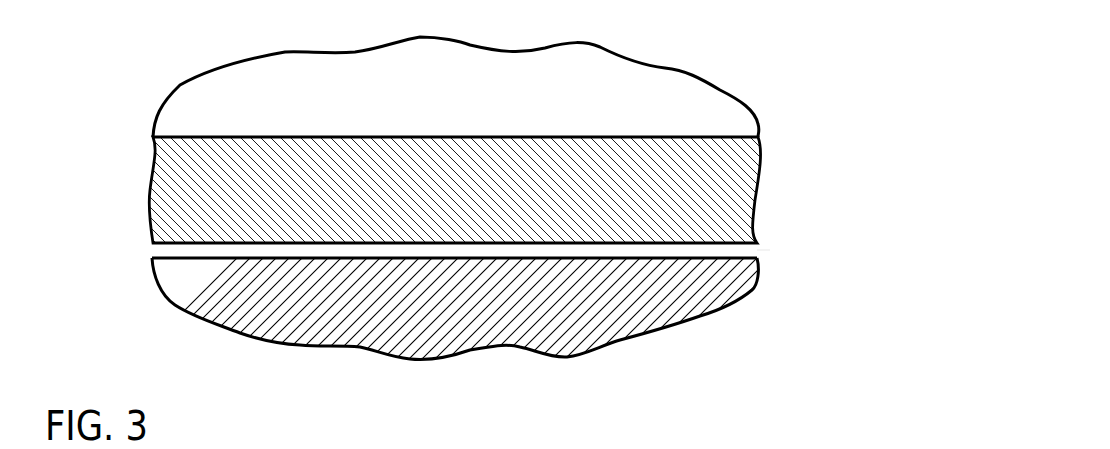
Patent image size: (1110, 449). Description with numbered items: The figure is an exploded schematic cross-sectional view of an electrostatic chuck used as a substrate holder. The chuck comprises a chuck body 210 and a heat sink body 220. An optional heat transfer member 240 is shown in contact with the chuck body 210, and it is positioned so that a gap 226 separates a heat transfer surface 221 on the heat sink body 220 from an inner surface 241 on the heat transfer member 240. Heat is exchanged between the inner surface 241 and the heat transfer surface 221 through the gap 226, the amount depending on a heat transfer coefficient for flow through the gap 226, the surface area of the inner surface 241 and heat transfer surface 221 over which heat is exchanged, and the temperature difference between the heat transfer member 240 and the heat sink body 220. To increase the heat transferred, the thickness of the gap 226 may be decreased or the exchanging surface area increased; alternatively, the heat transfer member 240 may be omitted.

The chuck body 210 is at (680, 100).
The heat sink body 220 is at (680, 290).
The heat transfer surface 221 is at (156, 256).
The gap 226 is at (777, 251).
The heat transfer member 240 is at (725, 183).
The inner surface 241 is at (751, 244).